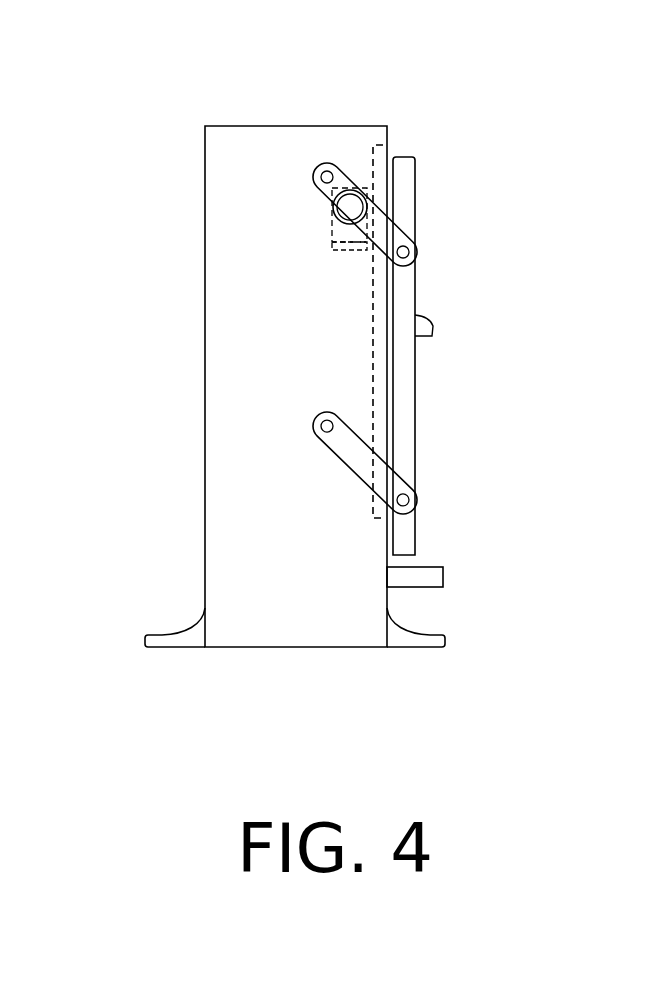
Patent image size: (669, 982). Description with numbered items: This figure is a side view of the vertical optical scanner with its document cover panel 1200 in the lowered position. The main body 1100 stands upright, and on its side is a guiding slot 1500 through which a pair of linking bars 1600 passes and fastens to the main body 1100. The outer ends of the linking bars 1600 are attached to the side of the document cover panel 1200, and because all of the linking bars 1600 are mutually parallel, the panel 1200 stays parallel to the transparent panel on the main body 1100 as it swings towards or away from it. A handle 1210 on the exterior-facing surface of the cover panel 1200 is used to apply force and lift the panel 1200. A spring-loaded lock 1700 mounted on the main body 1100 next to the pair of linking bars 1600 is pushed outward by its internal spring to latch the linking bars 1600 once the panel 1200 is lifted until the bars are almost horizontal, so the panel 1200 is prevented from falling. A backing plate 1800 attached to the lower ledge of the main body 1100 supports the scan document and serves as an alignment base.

The main body 1100 is at (218, 283).
The document cover panel 1200 is at (407, 390).
The handle 1210 is at (433, 325).
The guiding slot 1500 is at (386, 149).
The linking bar 1600 is at (415, 250).
The spring-loaded lock 1700 is at (333, 226).
The backing plate 1800 is at (435, 575).